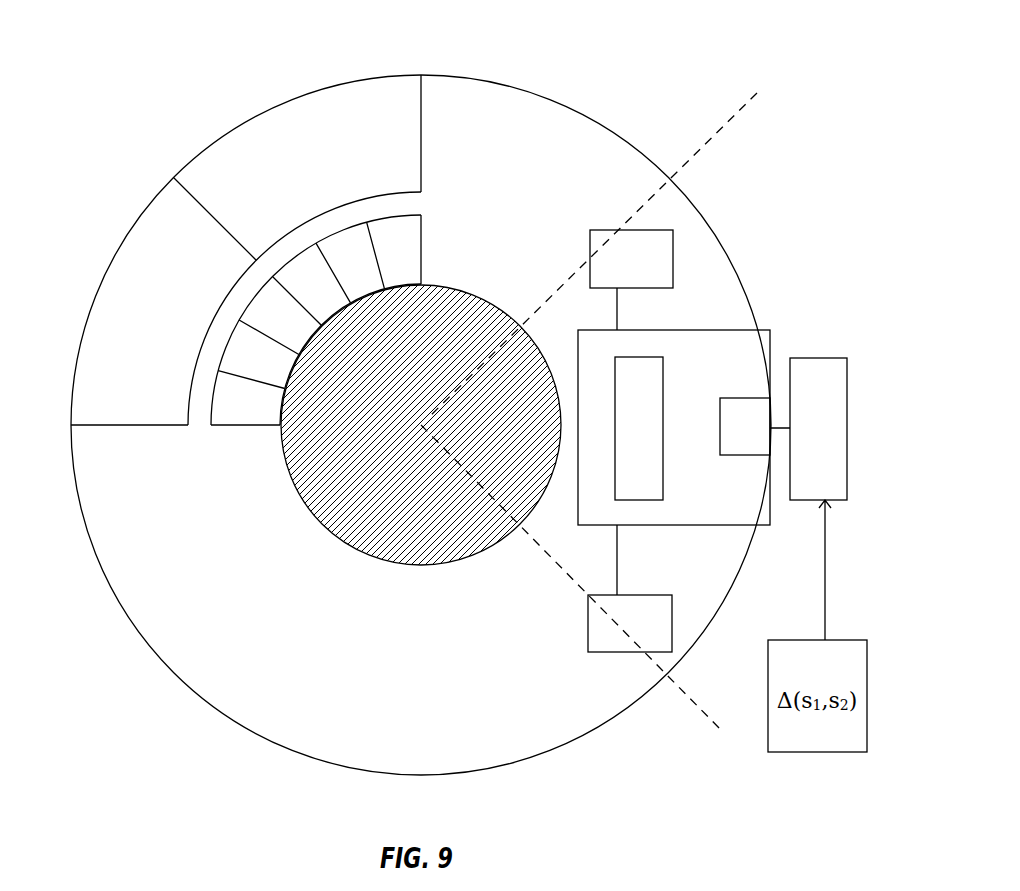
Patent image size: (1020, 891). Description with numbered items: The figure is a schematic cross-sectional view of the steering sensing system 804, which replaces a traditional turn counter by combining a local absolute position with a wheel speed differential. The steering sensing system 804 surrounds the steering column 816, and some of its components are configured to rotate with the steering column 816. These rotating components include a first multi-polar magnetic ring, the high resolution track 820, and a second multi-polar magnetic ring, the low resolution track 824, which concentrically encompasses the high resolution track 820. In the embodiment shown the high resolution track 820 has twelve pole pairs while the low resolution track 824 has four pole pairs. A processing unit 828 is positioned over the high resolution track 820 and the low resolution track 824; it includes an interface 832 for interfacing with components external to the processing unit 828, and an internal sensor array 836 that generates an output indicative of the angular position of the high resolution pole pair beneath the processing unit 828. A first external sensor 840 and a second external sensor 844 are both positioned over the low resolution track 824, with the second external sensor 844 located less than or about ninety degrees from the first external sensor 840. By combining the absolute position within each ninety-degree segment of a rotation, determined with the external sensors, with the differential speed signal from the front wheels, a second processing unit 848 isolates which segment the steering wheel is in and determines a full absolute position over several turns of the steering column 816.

The steering sensing system 804 is at (819, 162).
The steering column 816 is at (450, 288).
The high resolution track 820 is at (252, 425).
The low resolution track 824 is at (125, 425).
The processing unit 828 is at (740, 329).
The interface 832 is at (720, 433).
The internal sensor array 836 is at (665, 385).
The first external sensor 840 is at (673, 625).
The second external sensor 844 is at (673, 244).
The second processing unit 848 is at (793, 358).